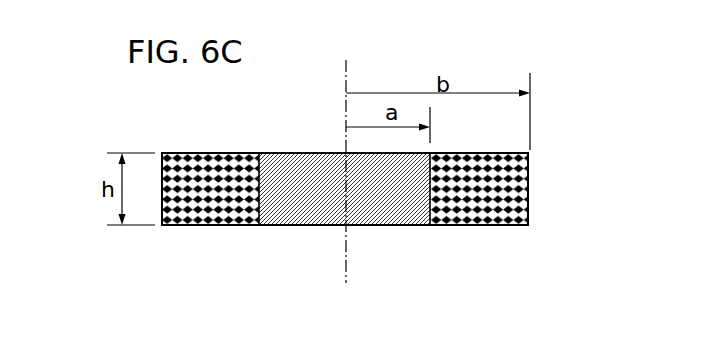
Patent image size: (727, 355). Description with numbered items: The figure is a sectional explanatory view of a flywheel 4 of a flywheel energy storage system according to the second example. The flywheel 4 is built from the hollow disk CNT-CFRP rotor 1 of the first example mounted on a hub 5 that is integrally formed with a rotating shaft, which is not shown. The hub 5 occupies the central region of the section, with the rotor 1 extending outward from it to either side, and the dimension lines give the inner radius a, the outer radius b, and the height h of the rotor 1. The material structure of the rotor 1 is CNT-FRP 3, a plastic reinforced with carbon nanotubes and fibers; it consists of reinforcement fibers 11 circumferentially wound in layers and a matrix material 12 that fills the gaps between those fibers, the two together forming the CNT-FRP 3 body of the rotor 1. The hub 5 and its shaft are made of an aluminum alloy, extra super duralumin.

The flywheel 4 is at (161, 128).
The rotor 1 is at (206, 225).
The hub 5 is at (295, 225).
The reinforcement fibers 11 is at (492, 190).
The matrix material 12 is at (502, 200).
The CNT-FRP 3 is at (536, 192).